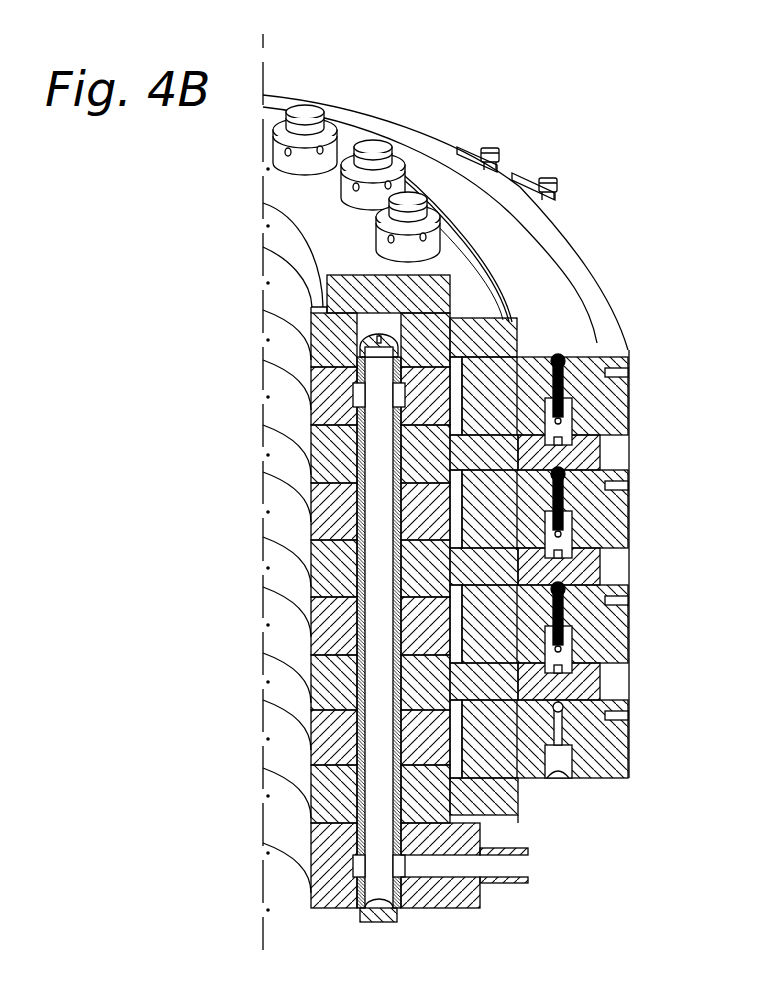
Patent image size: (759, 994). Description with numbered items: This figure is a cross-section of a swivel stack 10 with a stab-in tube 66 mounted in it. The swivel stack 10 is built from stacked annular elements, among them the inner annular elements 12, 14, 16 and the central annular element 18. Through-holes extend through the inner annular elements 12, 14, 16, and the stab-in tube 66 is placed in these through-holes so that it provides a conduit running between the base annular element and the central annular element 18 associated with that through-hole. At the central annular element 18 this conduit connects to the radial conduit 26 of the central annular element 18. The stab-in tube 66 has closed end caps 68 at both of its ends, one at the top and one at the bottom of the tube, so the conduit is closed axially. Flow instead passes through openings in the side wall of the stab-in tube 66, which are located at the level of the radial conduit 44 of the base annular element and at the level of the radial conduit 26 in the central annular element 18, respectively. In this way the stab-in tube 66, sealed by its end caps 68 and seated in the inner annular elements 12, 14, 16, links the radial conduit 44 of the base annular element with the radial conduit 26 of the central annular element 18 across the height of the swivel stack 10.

The swivel stack 10 is at (478, 270).
The inner annular element 12 is at (435, 695).
The inner annular element 14 is at (430, 632).
The inner annular element 16 is at (467, 573).
The central annular element 18 is at (610, 652).
The radial conduit 26 is at (560, 393).
The radial conduit 44 is at (450, 867).
The stab-in tube 66 is at (357, 742).
The end cap 68 is at (372, 348).